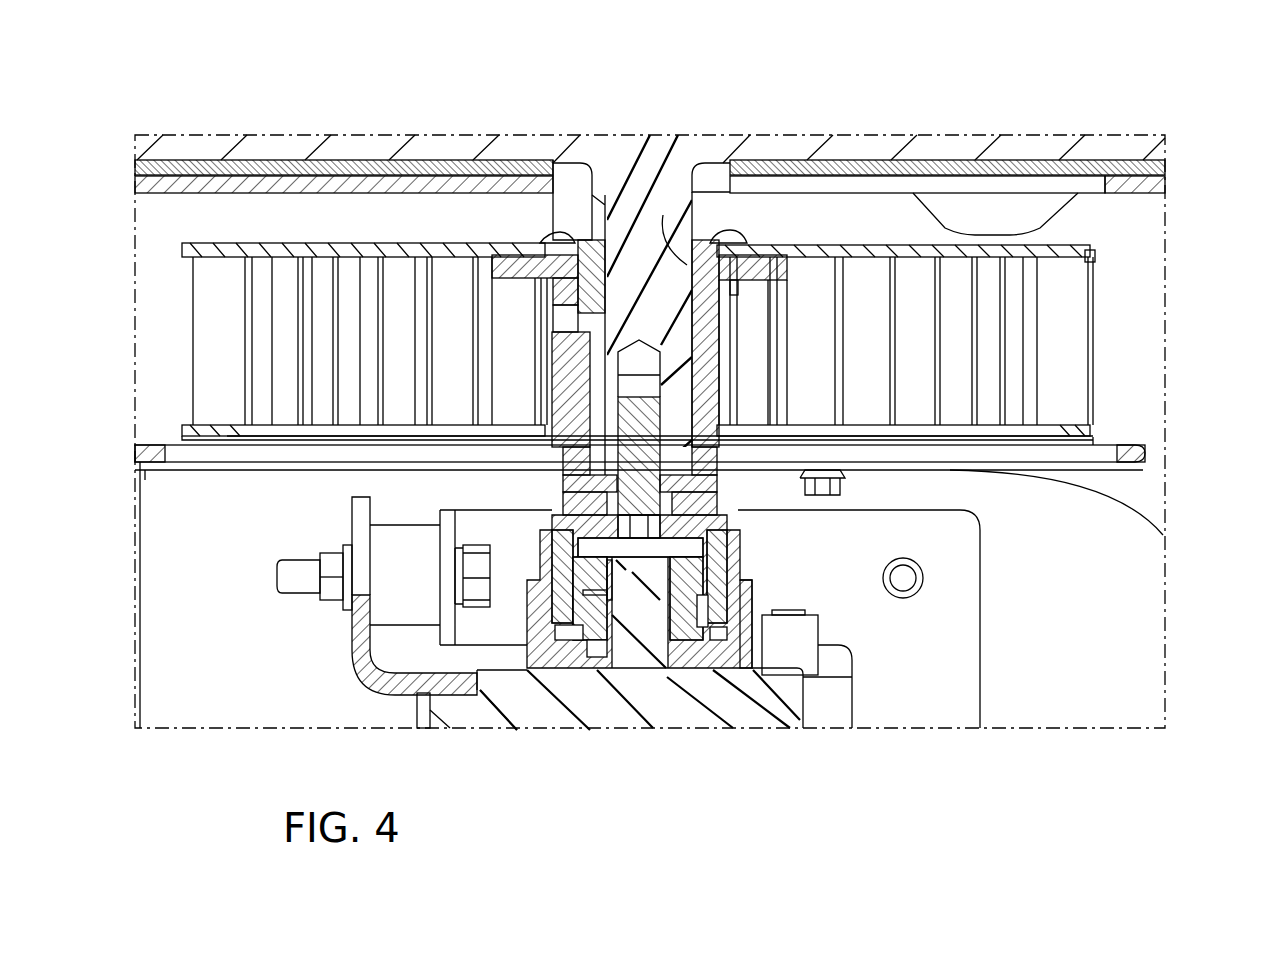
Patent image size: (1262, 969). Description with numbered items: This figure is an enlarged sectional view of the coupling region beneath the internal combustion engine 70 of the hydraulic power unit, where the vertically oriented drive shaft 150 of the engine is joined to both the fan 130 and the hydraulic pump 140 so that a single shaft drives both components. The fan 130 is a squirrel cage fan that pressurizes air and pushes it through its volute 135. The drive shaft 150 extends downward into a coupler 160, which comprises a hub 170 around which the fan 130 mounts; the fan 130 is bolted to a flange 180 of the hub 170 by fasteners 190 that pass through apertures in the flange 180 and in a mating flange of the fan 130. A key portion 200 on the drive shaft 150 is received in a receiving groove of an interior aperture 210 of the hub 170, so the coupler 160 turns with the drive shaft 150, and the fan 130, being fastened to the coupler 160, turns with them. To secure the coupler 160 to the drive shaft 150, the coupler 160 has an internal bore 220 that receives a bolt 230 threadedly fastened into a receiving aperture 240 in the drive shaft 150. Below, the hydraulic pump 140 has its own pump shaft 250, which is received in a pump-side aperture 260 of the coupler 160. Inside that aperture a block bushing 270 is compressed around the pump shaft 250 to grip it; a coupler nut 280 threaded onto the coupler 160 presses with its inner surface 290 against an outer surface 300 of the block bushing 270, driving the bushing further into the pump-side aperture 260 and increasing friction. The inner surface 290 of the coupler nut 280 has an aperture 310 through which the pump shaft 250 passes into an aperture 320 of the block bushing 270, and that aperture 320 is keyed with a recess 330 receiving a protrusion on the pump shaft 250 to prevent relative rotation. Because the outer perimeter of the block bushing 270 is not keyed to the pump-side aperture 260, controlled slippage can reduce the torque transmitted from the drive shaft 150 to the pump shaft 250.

The internal combustion engine 70 is at (880, 133).
The fan 130 is at (995, 328).
The volute 135 is at (197, 432).
The hydraulic pump 140 is at (662, 714).
The drive shaft 150 is at (633, 302).
The coupler 160 is at (735, 382).
The hub 170 is at (727, 333).
The flange 180 is at (507, 262).
The fasteners 190 is at (548, 237).
The key portion 200 is at (600, 200).
The interior aperture 210 is at (663, 215).
The internal bore 220 is at (617, 481).
The bolt 230 is at (655, 503).
The receiving aperture 240 is at (640, 427).
The pump shaft 250 is at (645, 600).
The pump-side aperture 260 is at (710, 650).
The block bushing 270 is at (593, 657).
The coupler nut 280 is at (540, 670).
The inner surface 290 is at (577, 636).
The outer surface 300 is at (667, 655).
The aperture 310 is at (620, 664).
The aperture 320 is at (668, 598).
The recess 330 is at (600, 588).